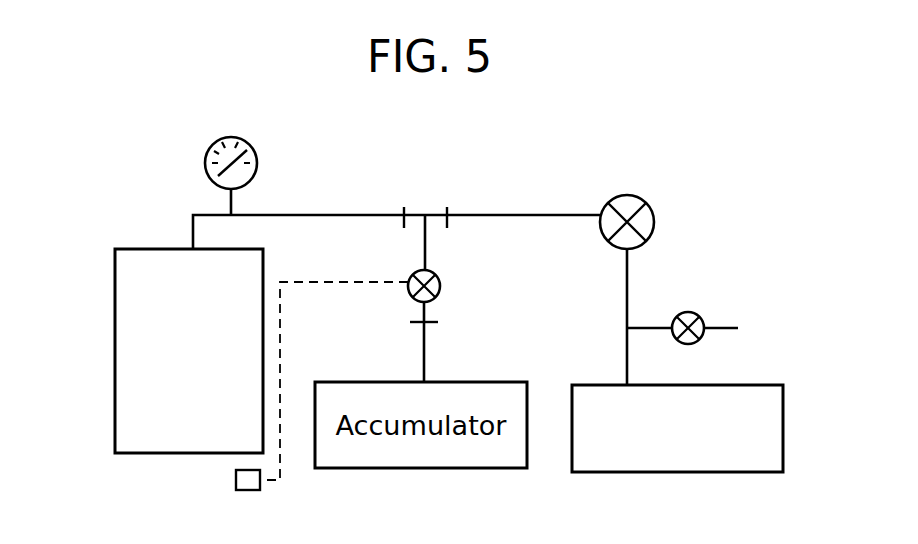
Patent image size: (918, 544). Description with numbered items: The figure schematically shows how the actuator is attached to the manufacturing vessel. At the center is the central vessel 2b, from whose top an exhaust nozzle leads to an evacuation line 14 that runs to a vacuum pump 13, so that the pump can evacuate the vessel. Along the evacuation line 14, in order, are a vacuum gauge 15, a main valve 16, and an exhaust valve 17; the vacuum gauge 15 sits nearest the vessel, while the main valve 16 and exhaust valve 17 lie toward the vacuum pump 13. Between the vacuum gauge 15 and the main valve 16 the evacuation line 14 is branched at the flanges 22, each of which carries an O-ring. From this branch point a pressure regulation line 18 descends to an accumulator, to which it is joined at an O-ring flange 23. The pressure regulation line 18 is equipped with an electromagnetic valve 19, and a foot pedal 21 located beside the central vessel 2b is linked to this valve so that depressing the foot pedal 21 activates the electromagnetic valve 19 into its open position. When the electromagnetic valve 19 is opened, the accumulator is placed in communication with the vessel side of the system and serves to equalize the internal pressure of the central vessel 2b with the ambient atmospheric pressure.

The central vessel 2b is at (115, 348).
The vacuum pump 13 is at (766, 385).
The evacuation line 14 is at (352, 213).
The vacuum gauge 15 is at (257, 165).
The main valve 16 is at (646, 200).
The exhaust valve 17 is at (700, 314).
The pressure regulation line 18 is at (428, 256).
The electromagnetic valve 19 is at (441, 286).
The foot pedal 21 is at (249, 491).
The flanges 22 is at (447, 209).
The O-ring flange 23 is at (417, 326).